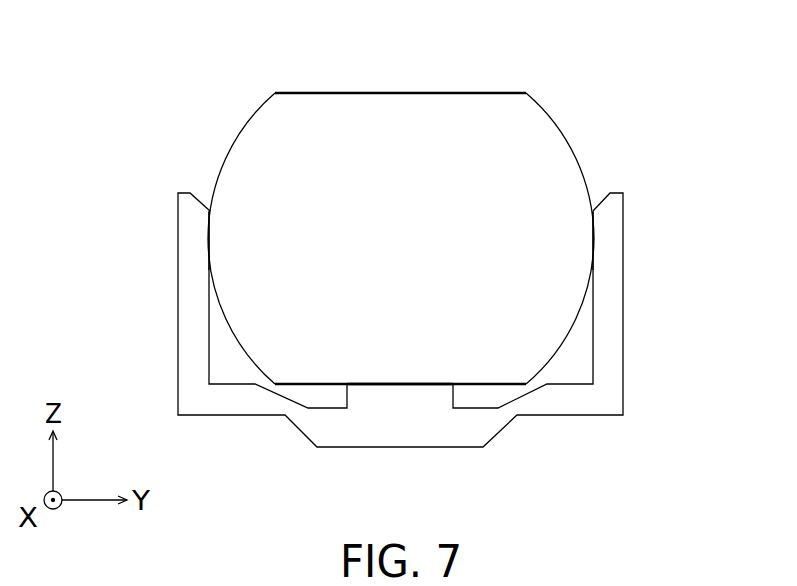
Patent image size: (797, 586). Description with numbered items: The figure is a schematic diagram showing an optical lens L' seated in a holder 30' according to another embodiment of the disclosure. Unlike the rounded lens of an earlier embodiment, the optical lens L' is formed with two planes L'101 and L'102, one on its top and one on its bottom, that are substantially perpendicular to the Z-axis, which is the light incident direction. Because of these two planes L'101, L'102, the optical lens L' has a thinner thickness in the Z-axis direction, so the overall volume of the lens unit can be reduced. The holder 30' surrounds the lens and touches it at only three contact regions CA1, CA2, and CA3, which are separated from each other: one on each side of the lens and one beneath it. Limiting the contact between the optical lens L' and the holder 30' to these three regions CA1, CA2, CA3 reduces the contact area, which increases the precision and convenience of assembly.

The optical lens L' is at (401, 206).
The plane L'101 is at (400, 60).
The plane L'102 is at (397, 450).
The contact region CA1 is at (210, 239).
The contact region CA2 is at (403, 386).
The contact region CA3 is at (593, 238).
The holder 30' is at (439, 320).